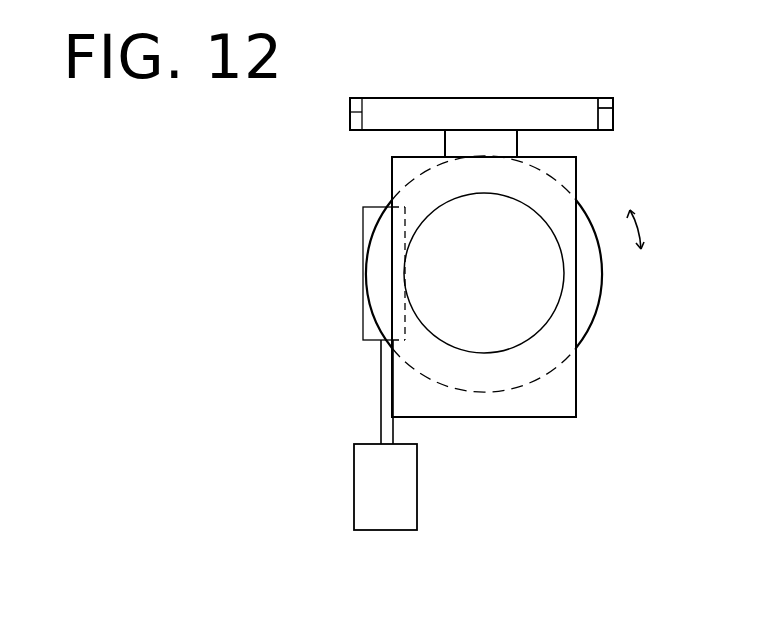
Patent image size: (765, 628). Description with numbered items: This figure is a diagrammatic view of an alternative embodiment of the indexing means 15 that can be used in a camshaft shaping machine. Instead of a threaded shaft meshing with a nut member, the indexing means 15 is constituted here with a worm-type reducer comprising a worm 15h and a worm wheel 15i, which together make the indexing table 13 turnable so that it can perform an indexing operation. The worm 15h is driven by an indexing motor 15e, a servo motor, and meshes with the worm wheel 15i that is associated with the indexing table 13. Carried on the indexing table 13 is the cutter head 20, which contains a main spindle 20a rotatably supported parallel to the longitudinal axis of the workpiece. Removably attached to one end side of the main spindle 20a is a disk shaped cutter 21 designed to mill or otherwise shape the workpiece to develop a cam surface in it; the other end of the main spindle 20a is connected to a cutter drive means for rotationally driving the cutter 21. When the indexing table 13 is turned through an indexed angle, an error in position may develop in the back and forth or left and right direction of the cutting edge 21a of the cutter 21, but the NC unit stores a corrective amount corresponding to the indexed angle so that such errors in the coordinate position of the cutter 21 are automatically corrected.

The indexing table 13 is at (577, 308).
The indexing means 15 is at (358, 348).
The indexing motor 15e is at (388, 512).
The worm 15h is at (363, 220).
The worm wheel 15i is at (455, 196).
The cutter head 20 is at (551, 398).
The main spindle 20a is at (493, 143).
The cutter 21 is at (563, 107).
The cutting edge 21a is at (606, 114).